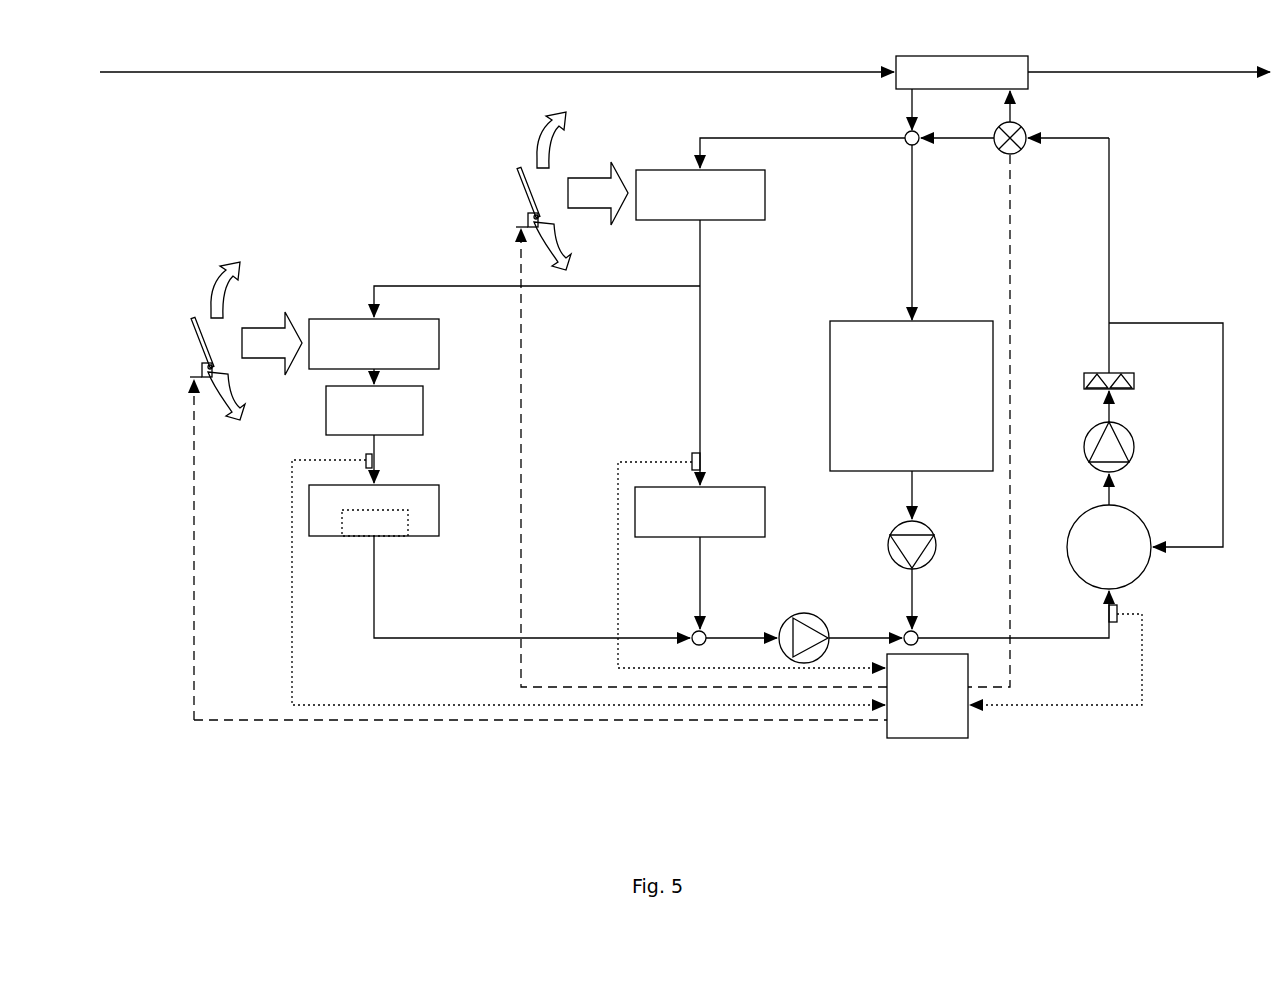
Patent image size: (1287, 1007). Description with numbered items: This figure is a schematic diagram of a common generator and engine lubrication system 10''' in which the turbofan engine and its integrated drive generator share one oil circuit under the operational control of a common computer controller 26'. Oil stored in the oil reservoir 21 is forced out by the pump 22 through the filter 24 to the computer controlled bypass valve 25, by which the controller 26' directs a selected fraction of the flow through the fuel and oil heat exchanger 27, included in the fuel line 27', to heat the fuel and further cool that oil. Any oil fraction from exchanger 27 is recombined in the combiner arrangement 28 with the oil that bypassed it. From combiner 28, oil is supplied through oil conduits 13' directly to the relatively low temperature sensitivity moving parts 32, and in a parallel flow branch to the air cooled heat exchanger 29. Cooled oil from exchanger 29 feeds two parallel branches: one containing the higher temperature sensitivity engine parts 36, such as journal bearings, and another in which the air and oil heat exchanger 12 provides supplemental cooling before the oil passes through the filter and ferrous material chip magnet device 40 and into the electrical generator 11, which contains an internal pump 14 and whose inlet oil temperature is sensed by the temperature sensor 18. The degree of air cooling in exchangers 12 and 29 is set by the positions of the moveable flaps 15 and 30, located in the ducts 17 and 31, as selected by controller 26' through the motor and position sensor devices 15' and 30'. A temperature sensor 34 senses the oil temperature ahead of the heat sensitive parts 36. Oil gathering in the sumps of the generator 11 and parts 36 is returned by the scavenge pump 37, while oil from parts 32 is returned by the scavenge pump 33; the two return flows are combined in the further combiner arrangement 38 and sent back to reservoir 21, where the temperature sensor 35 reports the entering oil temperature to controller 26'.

The common generator and engine lubrication system 10''' is at (216, 796).
The electrical generator 11 is at (405, 485).
The air and oil heat exchanger 12 is at (439, 335).
The oil conduits 13' is at (832, 365).
The pump 14 is at (360, 536).
The moveable flap 15 is at (219, 343).
The motor and position sensor device 15' is at (513, 537).
The duct 17 is at (232, 280).
The temperature sensor 18 is at (366, 458).
The oil reservoir 21 is at (1140, 572).
The pump 22 is at (1125, 465).
The filter 24 is at (1130, 374).
The bypass valve 25 is at (1022, 125).
The common computer controller 26' is at (961, 696).
The fuel and oil heat exchanger 27 is at (925, 77).
The fuel line 27' is at (685, 58).
The combiner arrangement 28 is at (905, 131).
The air cooled heat exchanger 29 is at (765, 185).
The moveable flap 30 is at (553, 193).
The motor and position sensor device 30' is at (510, 219).
The duct 31 is at (560, 125).
The low temperature sensitivity parts 32 is at (830, 420).
The scavenge pump 33 is at (935, 540).
The temperature sensor 34 is at (690, 455).
The temperature sensor 35 is at (1117, 625).
The higher temperature sensitivity parts 36 is at (745, 487).
The scavenge pump 37 is at (806, 612).
The combiner arrangement 38 is at (921, 635).
The filter and ferrous material chip magnet device 40 is at (326, 428).